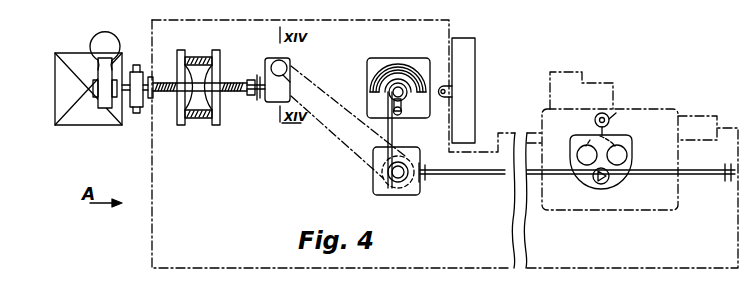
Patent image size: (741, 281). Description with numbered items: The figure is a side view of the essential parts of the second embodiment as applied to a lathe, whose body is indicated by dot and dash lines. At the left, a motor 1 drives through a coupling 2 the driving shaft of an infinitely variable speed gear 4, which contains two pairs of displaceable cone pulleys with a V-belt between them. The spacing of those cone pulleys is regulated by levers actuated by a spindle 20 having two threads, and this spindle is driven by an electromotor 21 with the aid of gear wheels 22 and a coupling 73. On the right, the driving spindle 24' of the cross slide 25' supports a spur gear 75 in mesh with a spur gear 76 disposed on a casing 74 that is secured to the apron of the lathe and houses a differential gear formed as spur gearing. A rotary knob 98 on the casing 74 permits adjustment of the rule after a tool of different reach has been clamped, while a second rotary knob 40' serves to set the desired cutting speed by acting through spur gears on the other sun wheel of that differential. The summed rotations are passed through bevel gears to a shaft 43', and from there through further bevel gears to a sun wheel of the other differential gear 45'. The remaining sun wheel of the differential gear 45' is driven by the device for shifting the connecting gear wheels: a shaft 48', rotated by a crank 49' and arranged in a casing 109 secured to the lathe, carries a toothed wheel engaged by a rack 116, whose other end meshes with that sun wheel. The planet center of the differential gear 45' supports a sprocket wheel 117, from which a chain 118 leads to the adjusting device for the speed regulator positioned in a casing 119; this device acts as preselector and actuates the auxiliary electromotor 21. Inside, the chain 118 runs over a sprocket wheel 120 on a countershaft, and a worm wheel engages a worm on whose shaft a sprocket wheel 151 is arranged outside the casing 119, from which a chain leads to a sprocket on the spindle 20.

The motor 1 is at (72, 125).
The gear wheels 22 is at (103, 108).
The electromotor 21 is at (108, 51).
The coupling 2 is at (135, 113).
The coupling 73 is at (150, 75).
The infinitely variable speed gear 4 is at (199, 77).
The spindle 20 is at (222, 100).
The sprocket wheel 151 is at (256, 101).
The casing 119 is at (272, 104).
The sprocket wheel 120 is at (285, 63).
The chain 118 is at (333, 133).
The casing 109 is at (377, 66).
The shaft 48' is at (372, 92).
The crank 49' is at (449, 102).
The rack 116 is at (392, 133).
The sprocket wheel 117 is at (386, 170).
The differential gear 45' is at (377, 174).
The shaft 43' is at (577, 185).
The casing 74 is at (632, 137).
The cross slide 25' is at (582, 78).
The driving spindle 24' is at (621, 98).
The spur gear 75 is at (609, 119).
The spur gear 76 is at (590, 140).
The rotary knob 40' is at (570, 156).
The rotary knob 98 is at (637, 157).